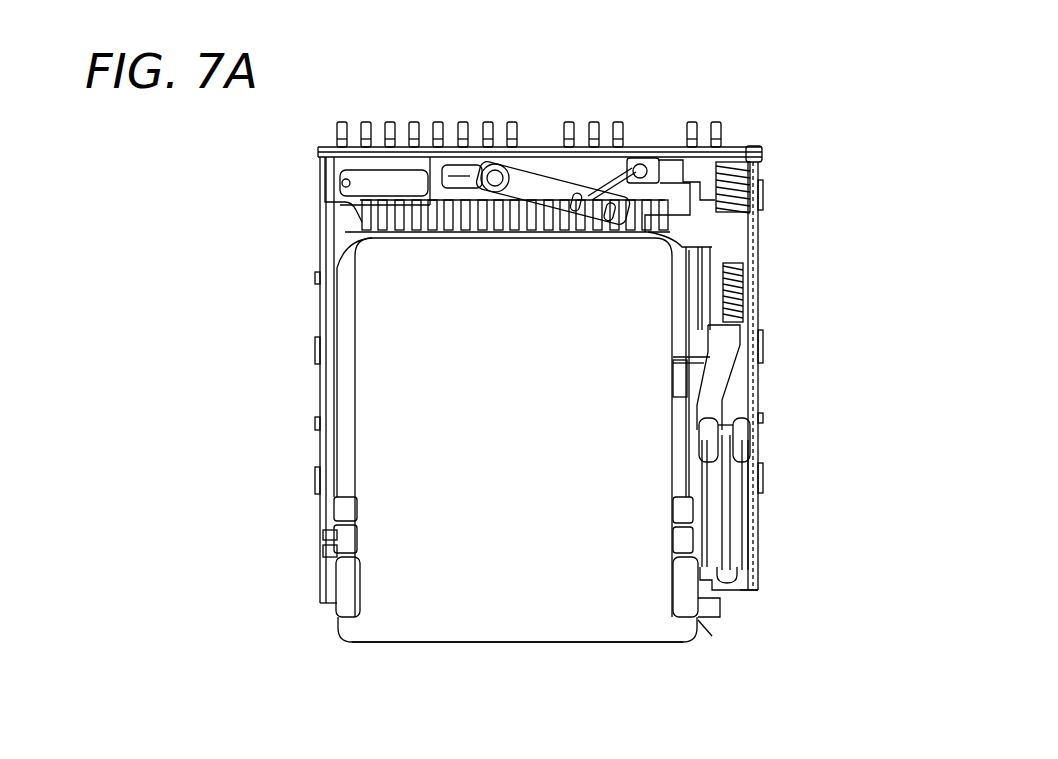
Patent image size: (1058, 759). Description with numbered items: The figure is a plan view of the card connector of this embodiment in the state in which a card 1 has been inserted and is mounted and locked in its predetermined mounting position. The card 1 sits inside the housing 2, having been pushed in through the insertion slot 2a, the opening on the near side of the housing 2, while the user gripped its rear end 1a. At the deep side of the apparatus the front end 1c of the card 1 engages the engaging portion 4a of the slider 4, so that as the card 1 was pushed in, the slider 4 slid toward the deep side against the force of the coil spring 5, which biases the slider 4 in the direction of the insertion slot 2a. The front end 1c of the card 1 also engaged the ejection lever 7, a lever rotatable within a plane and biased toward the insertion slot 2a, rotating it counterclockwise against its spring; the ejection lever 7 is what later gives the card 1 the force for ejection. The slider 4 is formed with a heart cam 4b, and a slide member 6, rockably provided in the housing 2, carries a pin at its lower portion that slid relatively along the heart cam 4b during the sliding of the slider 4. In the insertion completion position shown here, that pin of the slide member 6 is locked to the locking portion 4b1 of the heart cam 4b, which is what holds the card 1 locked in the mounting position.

The card 1 is at (441, 652).
The rear end 1a is at (620, 643).
The front end 1c is at (425, 212).
The housing 2 is at (324, 563).
The insertion slot 2a is at (703, 600).
The slider 4 is at (764, 240).
The engaging portion 4a is at (650, 212).
The heart cam 4b is at (752, 401).
The locking portion 4b1 is at (722, 433).
The coil spring 5 is at (746, 174).
The slide member 6 is at (722, 520).
The ejection lever 7 is at (545, 185).